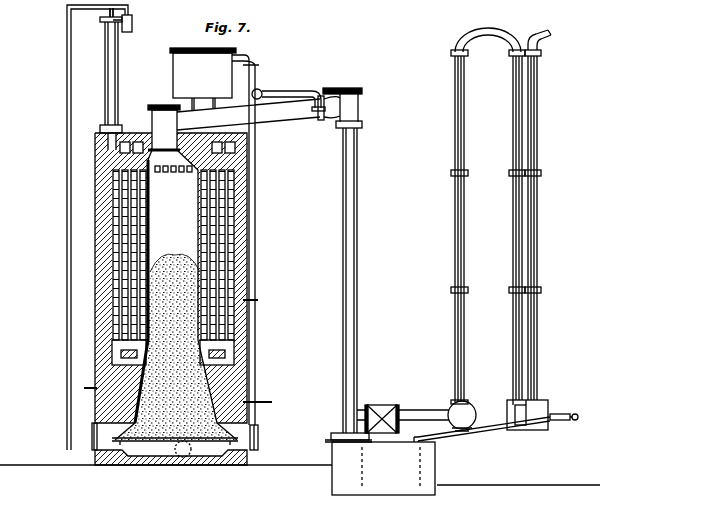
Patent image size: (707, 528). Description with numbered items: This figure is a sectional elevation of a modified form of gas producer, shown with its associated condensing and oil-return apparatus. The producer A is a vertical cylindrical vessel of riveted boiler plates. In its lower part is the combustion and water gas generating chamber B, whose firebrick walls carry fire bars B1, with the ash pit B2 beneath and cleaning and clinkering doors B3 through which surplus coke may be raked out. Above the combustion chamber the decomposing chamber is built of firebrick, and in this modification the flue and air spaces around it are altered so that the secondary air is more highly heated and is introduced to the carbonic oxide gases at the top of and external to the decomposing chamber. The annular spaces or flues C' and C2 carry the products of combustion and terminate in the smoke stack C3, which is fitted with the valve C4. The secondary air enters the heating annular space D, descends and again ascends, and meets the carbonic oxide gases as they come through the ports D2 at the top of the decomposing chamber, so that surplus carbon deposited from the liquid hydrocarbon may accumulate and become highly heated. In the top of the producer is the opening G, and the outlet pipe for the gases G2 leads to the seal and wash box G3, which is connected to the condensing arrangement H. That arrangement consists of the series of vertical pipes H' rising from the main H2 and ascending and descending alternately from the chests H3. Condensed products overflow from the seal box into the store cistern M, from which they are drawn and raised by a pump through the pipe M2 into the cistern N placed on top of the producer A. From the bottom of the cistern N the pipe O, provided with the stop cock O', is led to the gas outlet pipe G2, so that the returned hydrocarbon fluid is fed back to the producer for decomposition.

The producer A is at (99, 308).
The combustion and water gas generating chamber B is at (176, 347).
The fire bars B1 is at (183, 440).
The ash pit B2 is at (175, 449).
The cleaning and clinkering doors B3 is at (178, 437).
The annular space or flue C' is at (157, 286).
The annular space or flue C2 is at (266, 333).
The smoke stack C3 is at (112, 88).
The valve C4 is at (104, 25).
The heating annular space D is at (132, 210).
The ports D2 is at (166, 173).
The opening G is at (164, 127).
The outlet pipe for the gases G2 is at (250, 113).
The seal and wash box G3 is at (338, 435).
The cistern N is at (203, 79).
The pipe M2 is at (256, 83).
The stop cock O' is at (282, 89).
The pipe O is at (317, 89).
The condensing arrangement H is at (486, 216).
The vertical pipes H' is at (535, 230).
The main H2 is at (472, 410).
The condenser chests H3 is at (505, 440).
The store cistern M is at (383, 468).